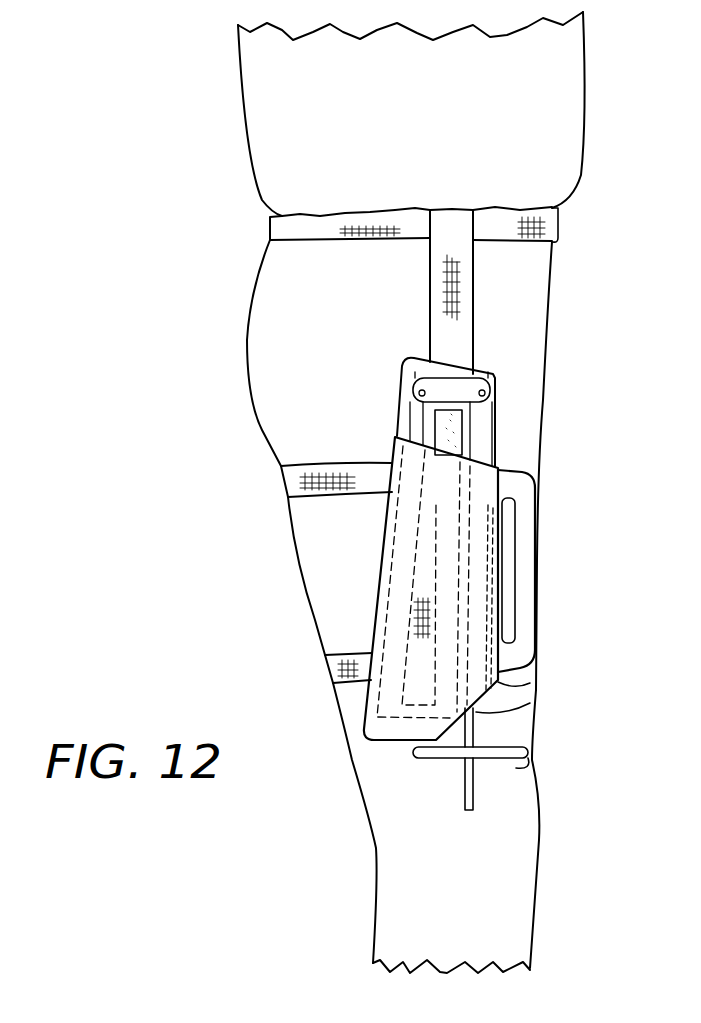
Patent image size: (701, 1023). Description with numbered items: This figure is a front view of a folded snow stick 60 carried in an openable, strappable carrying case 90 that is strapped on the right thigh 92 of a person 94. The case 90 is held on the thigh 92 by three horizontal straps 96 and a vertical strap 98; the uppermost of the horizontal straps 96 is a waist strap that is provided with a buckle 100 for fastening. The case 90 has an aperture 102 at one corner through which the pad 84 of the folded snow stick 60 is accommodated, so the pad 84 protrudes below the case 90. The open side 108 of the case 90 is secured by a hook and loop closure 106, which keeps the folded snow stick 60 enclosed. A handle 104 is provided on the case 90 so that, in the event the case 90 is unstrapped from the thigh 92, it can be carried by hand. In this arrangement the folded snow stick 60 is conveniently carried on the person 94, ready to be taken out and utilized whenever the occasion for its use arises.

The person 94 is at (427, 114).
The horizontal straps 96 is at (275, 226).
The vertical strap 98 is at (457, 337).
The buckle 100 is at (560, 220).
The strappable carrying case 90 is at (382, 557).
The right thigh 92 is at (340, 632).
The folded snow stick 60 is at (480, 425).
The open side 108 is at (497, 540).
The handle 104 is at (527, 575).
The hook and loop closure 106 is at (493, 660).
The aperture 102 is at (476, 710).
The pad 84 is at (537, 767).